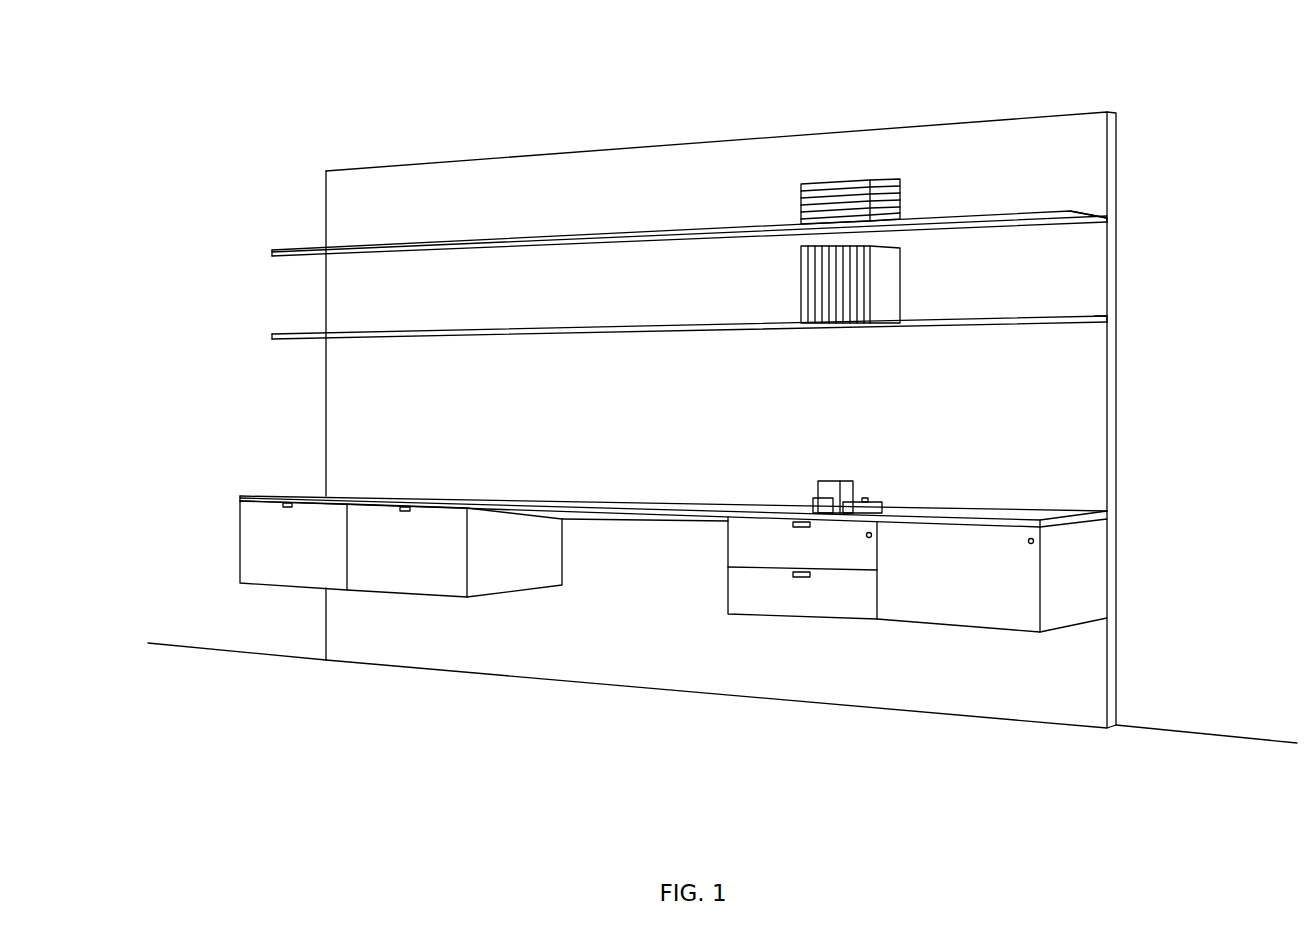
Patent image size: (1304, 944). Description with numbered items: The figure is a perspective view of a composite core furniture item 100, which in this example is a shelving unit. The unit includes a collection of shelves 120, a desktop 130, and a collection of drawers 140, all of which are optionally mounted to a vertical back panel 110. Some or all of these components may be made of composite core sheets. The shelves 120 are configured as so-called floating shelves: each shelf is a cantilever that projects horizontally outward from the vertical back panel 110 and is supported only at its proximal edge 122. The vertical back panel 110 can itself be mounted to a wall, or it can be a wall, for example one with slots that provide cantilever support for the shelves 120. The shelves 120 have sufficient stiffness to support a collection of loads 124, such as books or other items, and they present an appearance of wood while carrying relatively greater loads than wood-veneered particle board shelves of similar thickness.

The composite core furniture item 100 is at (198, 89).
The vertical back panel 110 is at (1116, 395).
The shelves 120 is at (1000, 226).
The proximal edge 122 is at (1110, 218).
The loads 124 is at (801, 183).
The desktop 130 is at (983, 518).
The drawers 140 is at (256, 586).